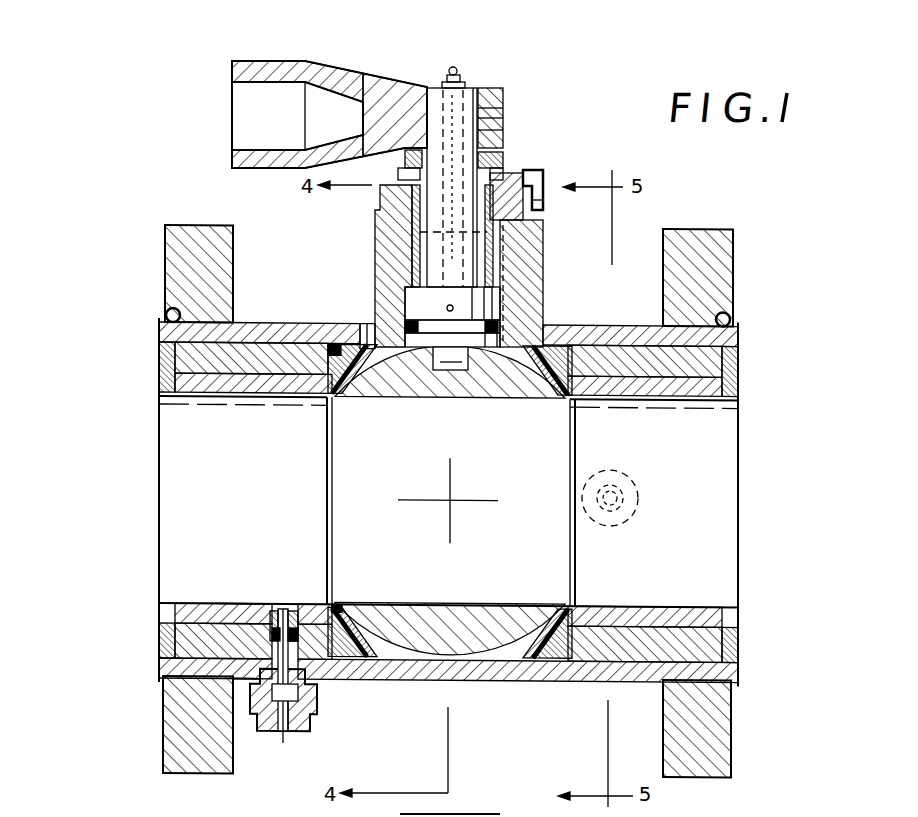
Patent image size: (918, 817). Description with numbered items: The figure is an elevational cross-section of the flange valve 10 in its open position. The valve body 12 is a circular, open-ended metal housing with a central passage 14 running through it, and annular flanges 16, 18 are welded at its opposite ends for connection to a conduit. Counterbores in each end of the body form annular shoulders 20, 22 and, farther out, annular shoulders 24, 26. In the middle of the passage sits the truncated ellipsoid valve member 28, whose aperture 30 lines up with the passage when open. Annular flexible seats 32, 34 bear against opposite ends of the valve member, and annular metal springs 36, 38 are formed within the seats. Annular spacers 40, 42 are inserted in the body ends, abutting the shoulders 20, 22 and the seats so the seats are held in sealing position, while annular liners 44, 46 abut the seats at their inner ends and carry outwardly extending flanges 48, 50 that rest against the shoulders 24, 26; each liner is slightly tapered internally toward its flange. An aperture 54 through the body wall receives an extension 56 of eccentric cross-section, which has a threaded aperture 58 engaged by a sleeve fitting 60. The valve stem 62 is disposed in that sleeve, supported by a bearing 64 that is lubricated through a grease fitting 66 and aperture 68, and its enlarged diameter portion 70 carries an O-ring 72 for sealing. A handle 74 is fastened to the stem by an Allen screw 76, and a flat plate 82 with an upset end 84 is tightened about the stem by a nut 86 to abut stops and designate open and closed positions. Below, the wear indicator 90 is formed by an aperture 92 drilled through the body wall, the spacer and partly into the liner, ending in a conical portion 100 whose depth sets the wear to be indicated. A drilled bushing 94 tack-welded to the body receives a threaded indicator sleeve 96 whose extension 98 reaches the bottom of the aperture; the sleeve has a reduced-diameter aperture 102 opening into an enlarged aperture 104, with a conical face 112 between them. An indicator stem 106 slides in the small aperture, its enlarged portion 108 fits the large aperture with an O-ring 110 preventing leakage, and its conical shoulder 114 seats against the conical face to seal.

The flange valve 10 is at (133, 210).
The valve body 12 is at (247, 317).
The central passage 14 is at (755, 531).
The annular flange 16 is at (185, 262).
The annular flange 18 is at (707, 252).
The annular shoulder 20 is at (356, 345).
The annular shoulder 22 is at (548, 320).
The annular shoulder 24 is at (162, 312).
The annular shoulder 26 is at (735, 316).
The truncated ellipsoid valve member 28 is at (457, 615).
The aperture 30 is at (523, 477).
The annular flexible seal or seat 32 is at (348, 358).
The annular flexible seal or seat 34 is at (545, 662).
The annular metal spring 36 is at (338, 662).
The annular metal spring 38 is at (556, 662).
The annular spacer 40 is at (268, 358).
The annular spacer 42 is at (668, 383).
The annular liner 44 is at (229, 393).
The annular liner 46 is at (628, 393).
The annular flange 48 is at (160, 363).
The annular flange 50 is at (740, 365).
The aperture 54 is at (367, 343).
The extension 56 is at (533, 238).
The annular threaded aperture 58 is at (400, 240).
The sleeve fitting 60 is at (505, 182).
The valve stem 62 is at (470, 197).
The bearing 64 is at (495, 190).
The grease fitting 66 is at (448, 74).
The aperture 68 is at (492, 92).
The enlarged diameter portion 70 is at (483, 297).
The O-ring 72 is at (490, 318).
The handle 74 is at (342, 85).
The Allen screw 76 is at (465, 185).
The flat plate 82 is at (543, 172).
The upset end 84 is at (545, 201).
The nut 86 is at (407, 157).
The wear indicator 90 is at (272, 749).
The aperture 92 is at (190, 645).
The drilled bushing 94 is at (253, 722).
The indicator sleeve 96 is at (300, 736).
The extension 98 is at (335, 606).
The conical portion 100 is at (285, 606).
The aperture of reduced diameter 102 is at (284, 736).
The aperture of enlarged diameter 104 is at (226, 608).
The indicator stem 106 is at (316, 716).
The enlarged diameter stem portion 108 is at (297, 606).
The O-ring 110 is at (243, 606).
The conical face 112 is at (257, 686).
The conical shoulder 114 is at (240, 677).